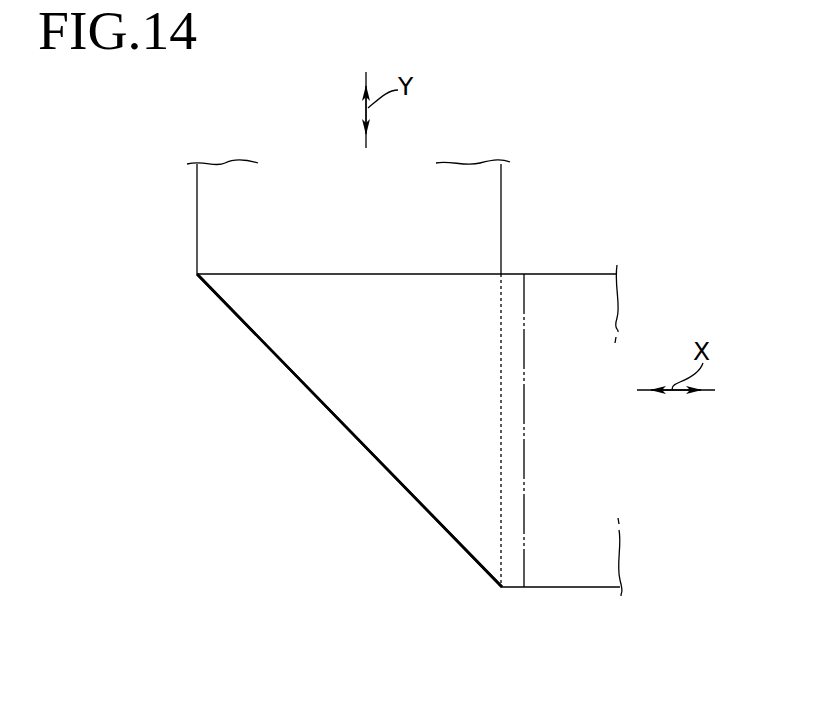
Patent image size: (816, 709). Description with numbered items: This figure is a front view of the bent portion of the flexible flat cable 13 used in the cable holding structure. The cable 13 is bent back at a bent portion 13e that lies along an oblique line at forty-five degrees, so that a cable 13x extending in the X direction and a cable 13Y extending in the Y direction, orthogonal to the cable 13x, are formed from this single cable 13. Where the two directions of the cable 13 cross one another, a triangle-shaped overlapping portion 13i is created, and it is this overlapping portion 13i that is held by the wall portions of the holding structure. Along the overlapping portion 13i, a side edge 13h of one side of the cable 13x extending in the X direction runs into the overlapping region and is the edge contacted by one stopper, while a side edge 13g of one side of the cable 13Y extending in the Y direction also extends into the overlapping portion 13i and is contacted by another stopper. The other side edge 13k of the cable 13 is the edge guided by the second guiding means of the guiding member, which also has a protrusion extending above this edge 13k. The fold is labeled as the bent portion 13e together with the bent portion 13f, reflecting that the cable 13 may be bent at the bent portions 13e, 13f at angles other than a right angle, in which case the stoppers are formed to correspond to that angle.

The cable 13 is at (452, 406).
The cable extending in Y direction 13Y is at (476, 211).
The side edge 13h is at (326, 272).
The cable extending in X direction 13x is at (581, 289).
The overlapping portion 13i is at (457, 430).
The bent portion 13e is at (415, 503).
The bent portion 13f is at (330, 406).
The side edge 13g is at (503, 450).
The side edge 13k is at (572, 588).